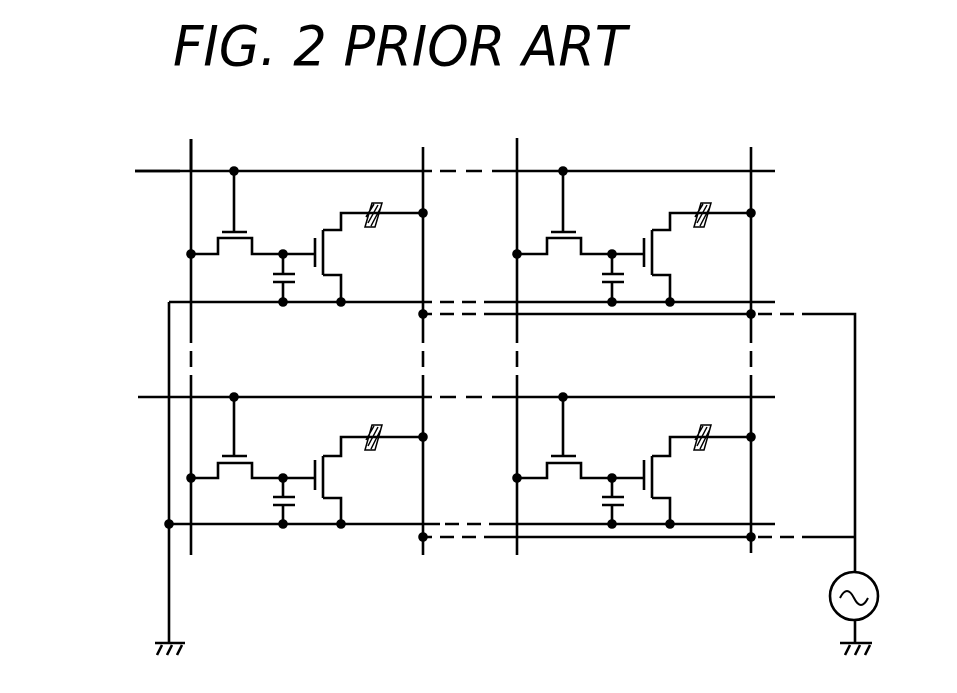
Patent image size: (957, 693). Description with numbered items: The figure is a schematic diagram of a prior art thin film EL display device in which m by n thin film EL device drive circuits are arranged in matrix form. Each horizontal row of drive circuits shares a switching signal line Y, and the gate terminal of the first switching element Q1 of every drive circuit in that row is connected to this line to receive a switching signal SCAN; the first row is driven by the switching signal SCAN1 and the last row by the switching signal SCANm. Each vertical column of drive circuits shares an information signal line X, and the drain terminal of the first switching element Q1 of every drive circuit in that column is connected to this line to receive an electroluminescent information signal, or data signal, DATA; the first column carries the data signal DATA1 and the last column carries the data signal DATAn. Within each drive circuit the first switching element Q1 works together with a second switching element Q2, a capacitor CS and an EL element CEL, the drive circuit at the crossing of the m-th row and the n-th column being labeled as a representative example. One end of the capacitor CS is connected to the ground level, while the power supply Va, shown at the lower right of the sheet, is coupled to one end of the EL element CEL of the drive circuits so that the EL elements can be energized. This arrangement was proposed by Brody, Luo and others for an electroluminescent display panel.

The data signal DATA1 is at (183, 331).
The data signal DATAn is at (516, 331).
The switching signal SCAN1 is at (411, 170).
The switching signal SCANm is at (411, 395).
The information signal line X is at (192, 157).
The switching signal line Y is at (145, 173).
The first switching element Q1 is at (579, 438).
The second switching element Q2 is at (692, 474).
The capacitor CS is at (600, 501).
The EL element CEL is at (703, 454).
The power supply Va is at (836, 613).